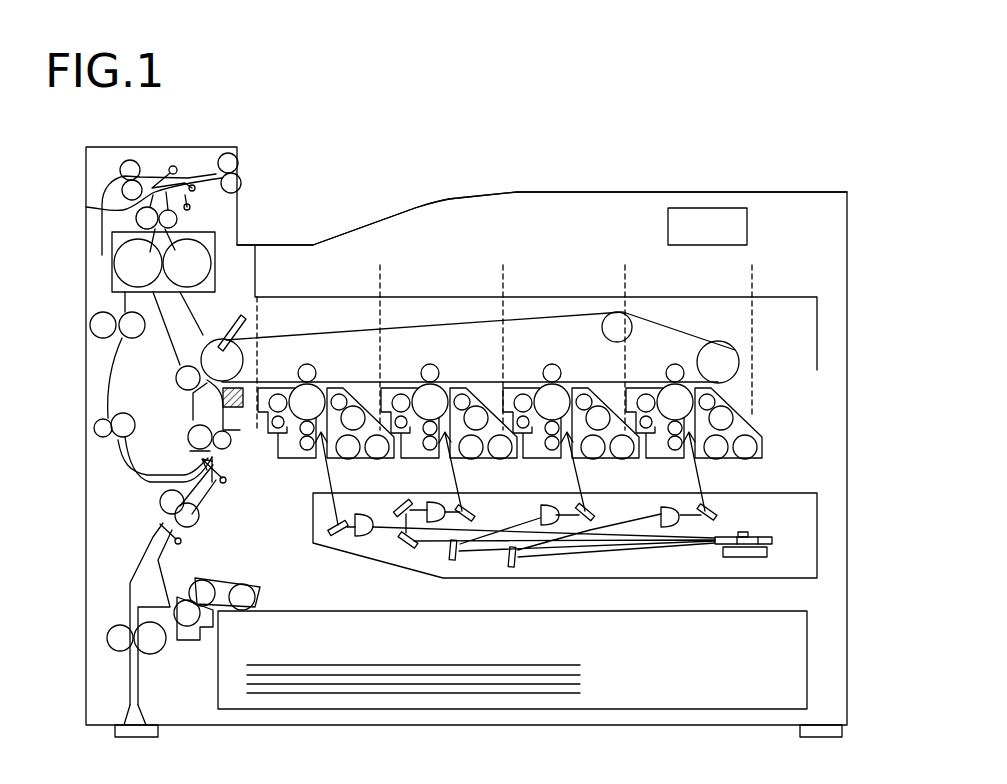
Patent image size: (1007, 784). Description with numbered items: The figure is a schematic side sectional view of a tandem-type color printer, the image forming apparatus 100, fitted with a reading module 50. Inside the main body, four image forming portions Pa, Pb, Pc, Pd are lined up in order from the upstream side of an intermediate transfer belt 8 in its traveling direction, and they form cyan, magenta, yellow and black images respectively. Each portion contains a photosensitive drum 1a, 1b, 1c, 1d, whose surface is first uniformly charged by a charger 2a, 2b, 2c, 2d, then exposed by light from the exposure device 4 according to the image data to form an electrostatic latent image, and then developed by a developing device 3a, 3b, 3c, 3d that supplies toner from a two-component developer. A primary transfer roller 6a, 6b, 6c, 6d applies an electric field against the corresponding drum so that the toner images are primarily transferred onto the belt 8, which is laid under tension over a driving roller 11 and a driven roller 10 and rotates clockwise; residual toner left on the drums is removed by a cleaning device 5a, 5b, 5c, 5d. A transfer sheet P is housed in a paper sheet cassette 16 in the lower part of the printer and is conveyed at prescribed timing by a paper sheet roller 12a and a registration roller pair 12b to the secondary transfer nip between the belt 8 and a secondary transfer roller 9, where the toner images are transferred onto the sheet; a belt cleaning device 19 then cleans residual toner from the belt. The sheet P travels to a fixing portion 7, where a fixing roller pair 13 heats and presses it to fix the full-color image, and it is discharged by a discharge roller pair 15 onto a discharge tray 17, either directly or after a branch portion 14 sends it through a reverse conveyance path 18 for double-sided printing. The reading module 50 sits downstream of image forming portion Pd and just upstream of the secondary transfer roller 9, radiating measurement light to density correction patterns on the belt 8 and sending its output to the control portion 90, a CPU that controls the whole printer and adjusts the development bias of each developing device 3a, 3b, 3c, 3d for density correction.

The image forming apparatus 100 is at (858, 313).
The discharge tray 17 is at (415, 208).
The belt cleaning device 19 is at (258, 264).
The control portion 90 is at (748, 227).
The discharge roller pair 15 is at (248, 166).
The fixing portion 7 is at (241, 215).
The branch portion 14 is at (130, 208).
The fixing roller pair 13 is at (135, 263).
The driving roller 11 is at (219, 350).
The intermediate transfer belt 8 is at (333, 333).
The driven roller 10 is at (728, 361).
The secondary transfer roller 9 is at (176, 383).
The reading module 50 is at (192, 406).
The reverse conveyance path 18 is at (110, 365).
The cleaning device 5d is at (229, 443).
The cleaning device 5c is at (383, 458).
The cleaning device 5b is at (507, 459).
The cleaning device 5a is at (622, 460).
The primary transfer roller 6d is at (299, 372).
The primary transfer roller 6c is at (422, 372).
The primary transfer roller 6b is at (546, 372).
The primary transfer roller 6a is at (669, 372).
The photosensitive drum 1d is at (307, 402).
The photosensitive drum 1c is at (430, 402).
The photosensitive drum 1b is at (552, 402).
The photosensitive drum 1a is at (675, 402).
The charger 2d is at (282, 460).
The charger 2c is at (426, 460).
The charger 2b is at (548, 460).
The charger 2a is at (669, 460).
The developing device 3d is at (352, 392).
The developing device 3c is at (477, 396).
The developing device 3b is at (600, 392).
The developing device 3a is at (763, 437).
The exposure device 4 is at (818, 524).
The paper sheet cassette 16 is at (807, 658).
The transfer sheet P is at (490, 668).
The paper sheet roller 12a is at (243, 596).
The registration roller pair 12b is at (222, 450).
The image forming portion Pd is at (260, 277).
The image forming portion Pc is at (383, 277).
The image forming portion Pb is at (506, 277).
The image forming portion Pa is at (628, 277).